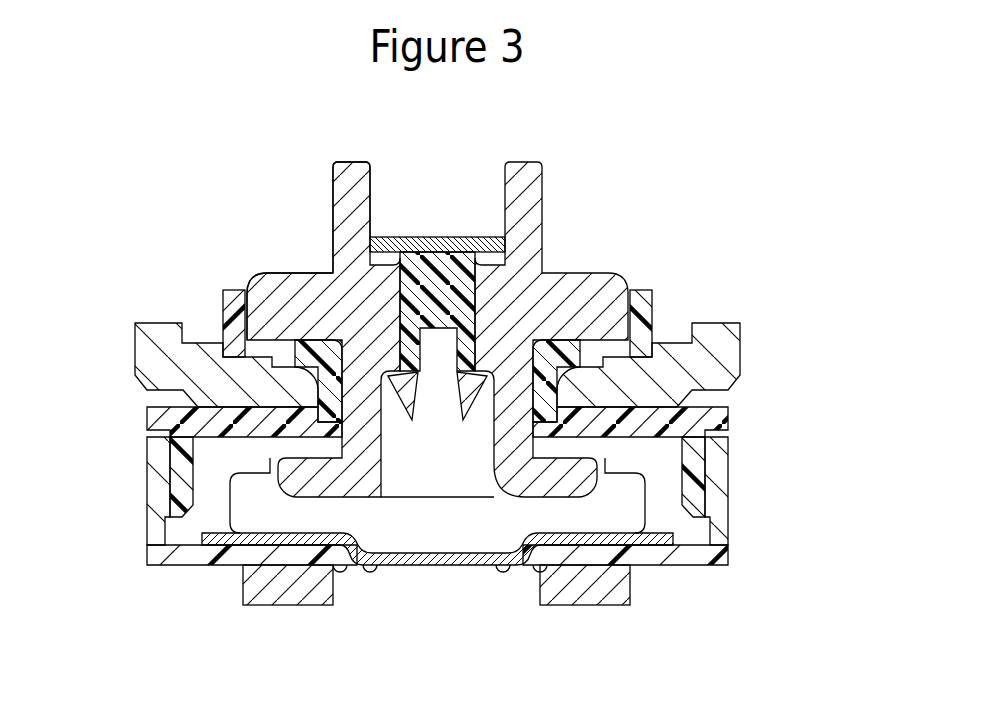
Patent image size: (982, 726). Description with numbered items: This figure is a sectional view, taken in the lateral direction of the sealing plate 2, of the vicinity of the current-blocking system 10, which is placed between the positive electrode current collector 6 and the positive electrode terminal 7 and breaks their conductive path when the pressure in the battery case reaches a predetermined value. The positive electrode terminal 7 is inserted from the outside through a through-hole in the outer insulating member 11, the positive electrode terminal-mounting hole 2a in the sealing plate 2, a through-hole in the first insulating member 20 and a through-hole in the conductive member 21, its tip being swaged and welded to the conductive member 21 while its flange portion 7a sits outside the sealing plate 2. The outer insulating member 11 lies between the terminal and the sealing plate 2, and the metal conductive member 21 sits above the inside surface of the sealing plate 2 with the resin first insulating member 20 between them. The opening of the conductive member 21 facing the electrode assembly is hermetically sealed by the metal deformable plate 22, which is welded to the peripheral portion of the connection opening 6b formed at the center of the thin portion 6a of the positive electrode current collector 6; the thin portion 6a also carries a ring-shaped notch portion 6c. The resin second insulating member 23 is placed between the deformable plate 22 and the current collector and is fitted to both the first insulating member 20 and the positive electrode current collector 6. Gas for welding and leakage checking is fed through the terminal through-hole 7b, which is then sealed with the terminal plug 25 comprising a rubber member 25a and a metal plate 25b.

The sealing plate 2 is at (155, 320).
The positive electrode terminal-mounting hole 2a is at (568, 383).
The positive electrode current collector 6 is at (283, 592).
The thin portion 6a is at (368, 573).
The connection opening 6b is at (497, 572).
The notch portion 6c is at (338, 573).
The positive electrode terminal 7 is at (542, 197).
The flange portion 7a is at (290, 285).
The terminal through-hole 7b is at (378, 195).
The current-blocking system 10 is at (465, 454).
The outer insulating member 11 is at (235, 298).
The first insulating member 20 is at (150, 410).
The conductive member 21 is at (740, 563).
The deformable plate 22 is at (613, 535).
The second insulating member 23 is at (165, 480).
The terminal plug 25 is at (437, 235).
The rubber member 25a is at (412, 265).
The metal plate 25b is at (465, 236).